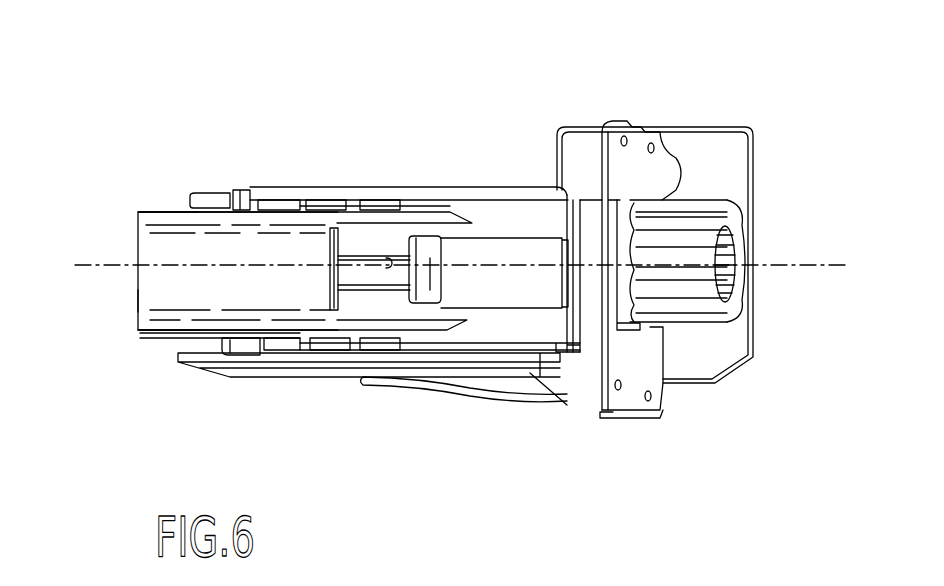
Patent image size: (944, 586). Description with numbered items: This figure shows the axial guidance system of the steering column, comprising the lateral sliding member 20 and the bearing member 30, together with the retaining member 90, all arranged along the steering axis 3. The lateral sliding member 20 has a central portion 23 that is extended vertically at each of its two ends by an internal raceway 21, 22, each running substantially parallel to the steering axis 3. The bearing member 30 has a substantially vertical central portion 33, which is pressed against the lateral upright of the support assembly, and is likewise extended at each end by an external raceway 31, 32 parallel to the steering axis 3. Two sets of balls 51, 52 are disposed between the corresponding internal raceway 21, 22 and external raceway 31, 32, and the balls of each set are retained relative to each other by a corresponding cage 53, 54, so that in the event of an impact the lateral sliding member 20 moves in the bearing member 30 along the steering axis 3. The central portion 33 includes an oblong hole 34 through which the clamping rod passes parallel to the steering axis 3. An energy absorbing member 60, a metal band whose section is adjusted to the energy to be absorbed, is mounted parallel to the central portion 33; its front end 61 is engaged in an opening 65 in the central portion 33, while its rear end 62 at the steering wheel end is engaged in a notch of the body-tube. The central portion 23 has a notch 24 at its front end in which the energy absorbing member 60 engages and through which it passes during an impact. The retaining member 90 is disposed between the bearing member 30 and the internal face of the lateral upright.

The steering axis 3 is at (816, 265).
The lateral sliding member 20 is at (173, 210).
The internal raceway 21 is at (153, 212).
The internal raceway 22 is at (165, 333).
The central portion 23 is at (135, 296).
The notch 24 is at (372, 308).
The bearing member 30 is at (432, 188).
The external raceway 31 is at (522, 197).
The external raceway 32 is at (541, 350).
The central portion 33 is at (495, 218).
The oblong hole 34 is at (392, 262).
The balls 51 is at (318, 200).
The balls 52 is at (318, 340).
The cage 53 is at (297, 203).
The cage 54 is at (290, 338).
The energy absorbing member 60 is at (498, 298).
The front end 61 is at (578, 287).
The rear end 62 is at (406, 294).
The opening 65 is at (536, 258).
The retaining member 90 is at (657, 385).